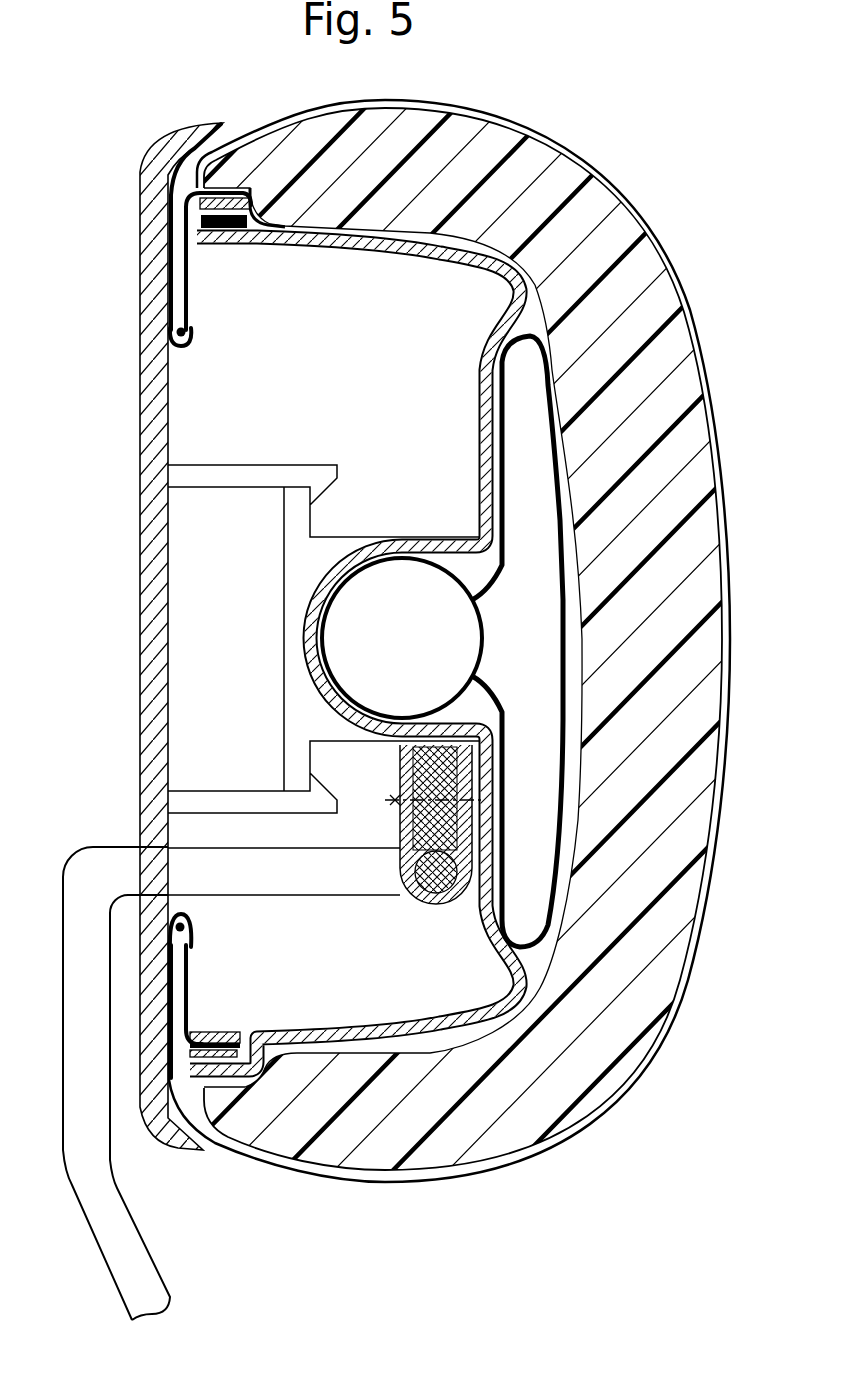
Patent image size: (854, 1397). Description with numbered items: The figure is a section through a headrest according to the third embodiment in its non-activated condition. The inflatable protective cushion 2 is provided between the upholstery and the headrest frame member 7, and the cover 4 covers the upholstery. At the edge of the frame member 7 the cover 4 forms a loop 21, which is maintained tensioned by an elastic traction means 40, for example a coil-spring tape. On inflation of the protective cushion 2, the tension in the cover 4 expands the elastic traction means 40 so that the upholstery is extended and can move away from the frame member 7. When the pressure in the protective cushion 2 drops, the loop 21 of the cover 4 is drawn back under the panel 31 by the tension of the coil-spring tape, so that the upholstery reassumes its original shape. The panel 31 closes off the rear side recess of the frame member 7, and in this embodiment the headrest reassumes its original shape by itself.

The inflatable protective cushion 2 is at (540, 576).
The cover 4 is at (705, 385).
The headrest frame member 7 is at (387, 1045).
The loop 21 is at (190, 297).
The panel 31 is at (153, 640).
The elastic traction means 40 is at (174, 334).